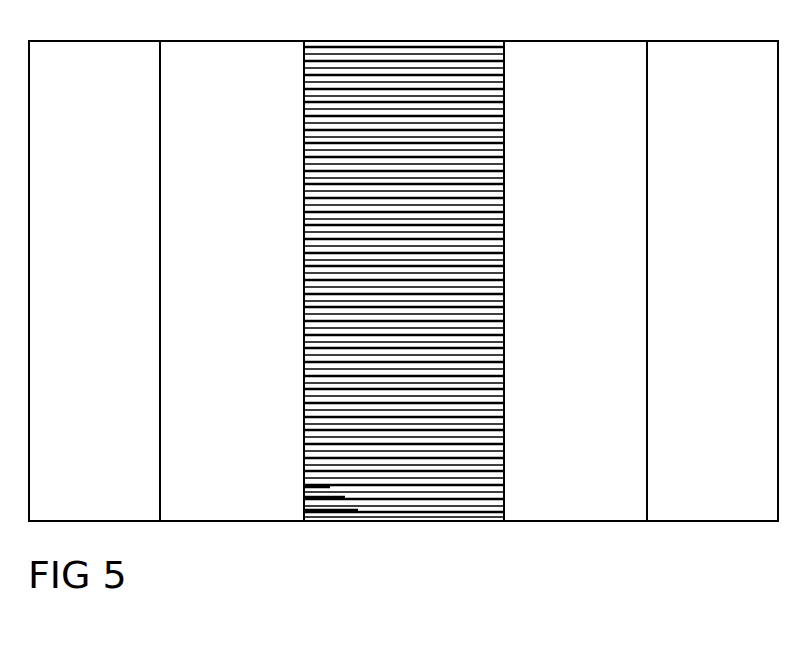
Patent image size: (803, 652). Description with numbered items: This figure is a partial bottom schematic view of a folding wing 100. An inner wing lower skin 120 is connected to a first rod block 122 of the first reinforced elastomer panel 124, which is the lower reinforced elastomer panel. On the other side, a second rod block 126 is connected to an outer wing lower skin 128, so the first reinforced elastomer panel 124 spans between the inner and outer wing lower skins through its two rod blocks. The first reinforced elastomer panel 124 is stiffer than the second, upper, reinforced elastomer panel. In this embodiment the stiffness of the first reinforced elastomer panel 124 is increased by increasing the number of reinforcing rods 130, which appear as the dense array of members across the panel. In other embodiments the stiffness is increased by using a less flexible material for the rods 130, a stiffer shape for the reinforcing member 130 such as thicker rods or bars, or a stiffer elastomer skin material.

The folding wing 100 is at (420, 592).
The inner wing lower skin 120 is at (84, 503).
The first rod block 122 is at (209, 503).
The first reinforced elastomer panel 124 is at (455, 535).
The second rod block 126 is at (575, 507).
The outer wing lower skin 128 is at (713, 507).
The reinforcing rods 130 is at (356, 510).